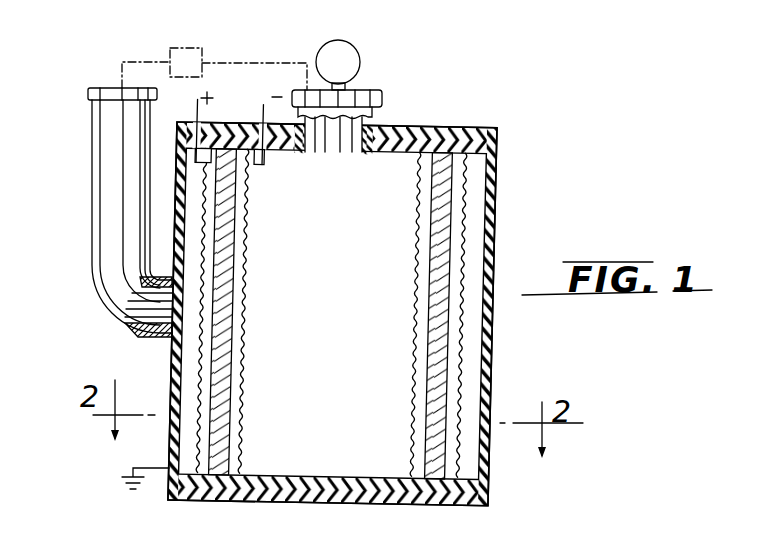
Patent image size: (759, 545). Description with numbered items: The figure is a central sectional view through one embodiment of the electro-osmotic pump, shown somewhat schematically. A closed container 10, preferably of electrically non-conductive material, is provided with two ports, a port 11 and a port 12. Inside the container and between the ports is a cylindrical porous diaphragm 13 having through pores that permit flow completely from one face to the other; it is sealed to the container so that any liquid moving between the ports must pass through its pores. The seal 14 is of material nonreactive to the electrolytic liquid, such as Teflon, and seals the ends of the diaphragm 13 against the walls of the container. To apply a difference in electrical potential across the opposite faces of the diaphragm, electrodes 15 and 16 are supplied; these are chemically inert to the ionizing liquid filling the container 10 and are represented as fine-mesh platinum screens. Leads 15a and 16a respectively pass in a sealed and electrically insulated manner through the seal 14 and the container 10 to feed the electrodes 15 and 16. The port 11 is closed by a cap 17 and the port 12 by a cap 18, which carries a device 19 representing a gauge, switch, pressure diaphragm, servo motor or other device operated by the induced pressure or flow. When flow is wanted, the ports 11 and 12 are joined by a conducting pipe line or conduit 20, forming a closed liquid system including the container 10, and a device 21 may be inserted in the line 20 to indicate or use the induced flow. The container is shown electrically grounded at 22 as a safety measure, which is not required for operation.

The closed container 10 is at (468, 127).
The port 11 is at (108, 225).
The port 12 is at (343, 146).
The cylindrical porous diaphragm 13 is at (233, 238).
The seal 14 is at (390, 148).
The electrode 15 is at (206, 217).
The lead 15a is at (199, 108).
The electrode 16 is at (250, 184).
The lead 16a is at (263, 103).
The cap 17 is at (88, 92).
The cap 18 is at (362, 91).
The device 19 is at (356, 52).
The conduit 20 is at (237, 61).
The device 21 is at (193, 47).
The electrical ground 22 is at (143, 467).